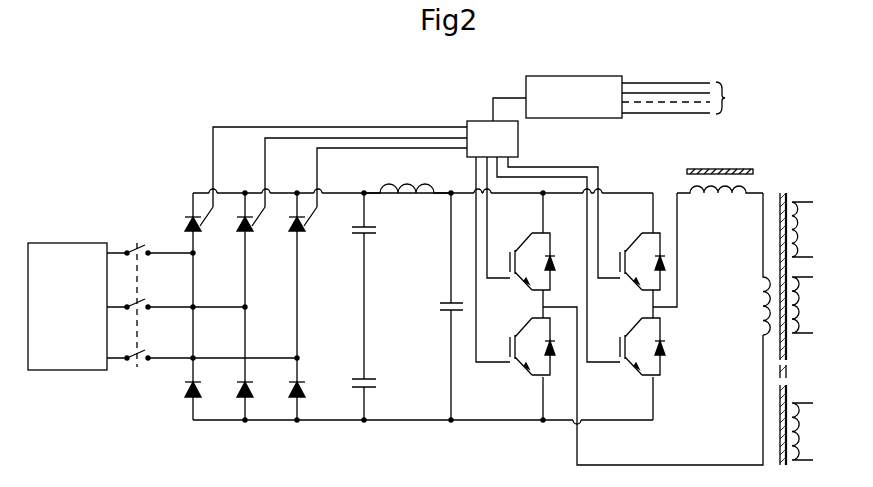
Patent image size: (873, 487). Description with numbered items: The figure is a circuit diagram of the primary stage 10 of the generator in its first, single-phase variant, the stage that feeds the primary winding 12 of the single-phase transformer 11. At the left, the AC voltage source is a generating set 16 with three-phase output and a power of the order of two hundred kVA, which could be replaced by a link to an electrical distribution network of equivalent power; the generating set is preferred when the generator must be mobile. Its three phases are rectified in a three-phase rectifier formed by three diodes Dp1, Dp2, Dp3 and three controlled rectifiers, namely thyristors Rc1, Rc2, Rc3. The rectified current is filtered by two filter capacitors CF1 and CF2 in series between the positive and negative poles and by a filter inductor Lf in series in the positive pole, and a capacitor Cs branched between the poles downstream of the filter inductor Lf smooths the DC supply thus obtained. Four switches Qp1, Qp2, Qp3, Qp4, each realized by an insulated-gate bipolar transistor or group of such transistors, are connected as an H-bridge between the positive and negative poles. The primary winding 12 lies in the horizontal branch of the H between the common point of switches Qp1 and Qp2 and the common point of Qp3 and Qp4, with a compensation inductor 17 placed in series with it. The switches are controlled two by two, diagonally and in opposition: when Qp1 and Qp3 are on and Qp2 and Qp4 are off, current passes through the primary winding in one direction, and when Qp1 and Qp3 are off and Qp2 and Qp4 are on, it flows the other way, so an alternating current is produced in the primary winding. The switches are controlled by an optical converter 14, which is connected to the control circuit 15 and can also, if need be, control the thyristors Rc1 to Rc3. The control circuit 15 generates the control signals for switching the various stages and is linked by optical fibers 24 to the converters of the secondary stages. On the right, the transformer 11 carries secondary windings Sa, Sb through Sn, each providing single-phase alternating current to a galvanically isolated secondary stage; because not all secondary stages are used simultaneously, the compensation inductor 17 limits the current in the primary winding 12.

The primary stage 10 is at (113, 130).
The generating set 16 is at (67, 275).
The thyristor Rc1 is at (193, 217).
The thyristor Rc2 is at (245, 217).
The thyristor Rc3 is at (297, 217).
The diode Dp1 is at (190, 397).
The diode Dp2 is at (242, 397).
The diode Dp3 is at (294, 397).
The filter capacitor CF1 is at (350, 232).
The filter capacitor CF2 is at (350, 380).
The filter inductor Lf is at (415, 188).
The capacitor Cs is at (441, 305).
The switch Qp1 is at (533, 252).
The switch Qp2 is at (533, 363).
The switch Qp3 is at (643, 252).
The switch Qp4 is at (643, 363).
The optical converter 14 is at (496, 127).
The control circuit 15 is at (574, 97).
The optical fiber 24 is at (689, 98).
The compensation inductor 17 is at (727, 175).
The primary winding 12 is at (765, 307).
The single-phase transformer 11 is at (788, 378).
The secondary winding Sa is at (800, 232).
The secondary winding Sb is at (800, 306).
The secondary winding Sn is at (800, 432).